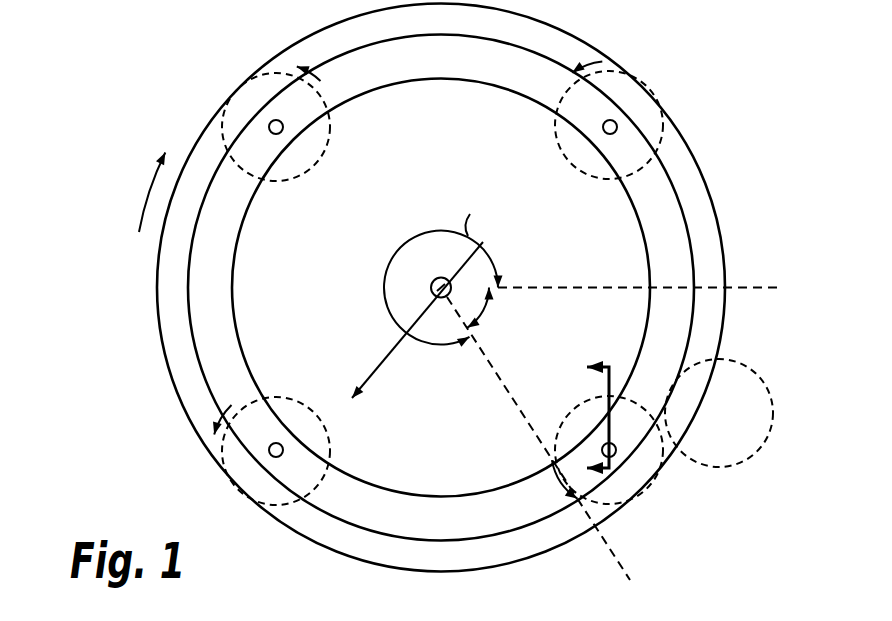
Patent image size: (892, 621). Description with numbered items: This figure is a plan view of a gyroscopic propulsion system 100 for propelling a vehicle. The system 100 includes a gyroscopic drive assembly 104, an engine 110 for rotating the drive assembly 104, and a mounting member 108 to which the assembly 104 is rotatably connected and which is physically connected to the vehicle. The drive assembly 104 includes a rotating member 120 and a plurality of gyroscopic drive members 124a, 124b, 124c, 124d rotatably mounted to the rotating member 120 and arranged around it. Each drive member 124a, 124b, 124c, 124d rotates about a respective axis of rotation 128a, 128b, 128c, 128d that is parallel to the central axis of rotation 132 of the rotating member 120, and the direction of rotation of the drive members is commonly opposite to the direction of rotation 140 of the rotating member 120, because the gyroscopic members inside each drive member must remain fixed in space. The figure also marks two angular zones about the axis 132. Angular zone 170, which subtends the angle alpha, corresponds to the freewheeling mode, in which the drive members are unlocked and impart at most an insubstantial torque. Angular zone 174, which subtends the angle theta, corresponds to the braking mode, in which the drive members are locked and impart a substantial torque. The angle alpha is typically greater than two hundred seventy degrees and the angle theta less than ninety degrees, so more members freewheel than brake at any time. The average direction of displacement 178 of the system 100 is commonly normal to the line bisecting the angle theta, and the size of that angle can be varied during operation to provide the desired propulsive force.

The gyroscopic propulsion system 100 is at (88, 367).
The gyroscopic drive assembly 104 is at (140, 318).
The mounting member 108 is at (180, 398).
The engine 110 is at (755, 372).
The rotating member 120 is at (675, 256).
The gyroscopic drive member 124a is at (660, 145).
The gyroscopic drive member 124b is at (605, 504).
The gyroscopic drive member 124c is at (283, 504).
The gyroscopic drive member 124d is at (222, 137).
The axis of rotation 128a is at (616, 121).
The axis of rotation 128b is at (602, 444).
The axis of rotation 128c is at (283, 447).
The axis of rotation 128d is at (284, 133).
The axis of rotation 132 is at (480, 250).
The direction of rotation 140 is at (150, 190).
The angular zone 170 is at (400, 247).
The angular zone 174 is at (476, 320).
The average direction of displacement 178 is at (417, 326).